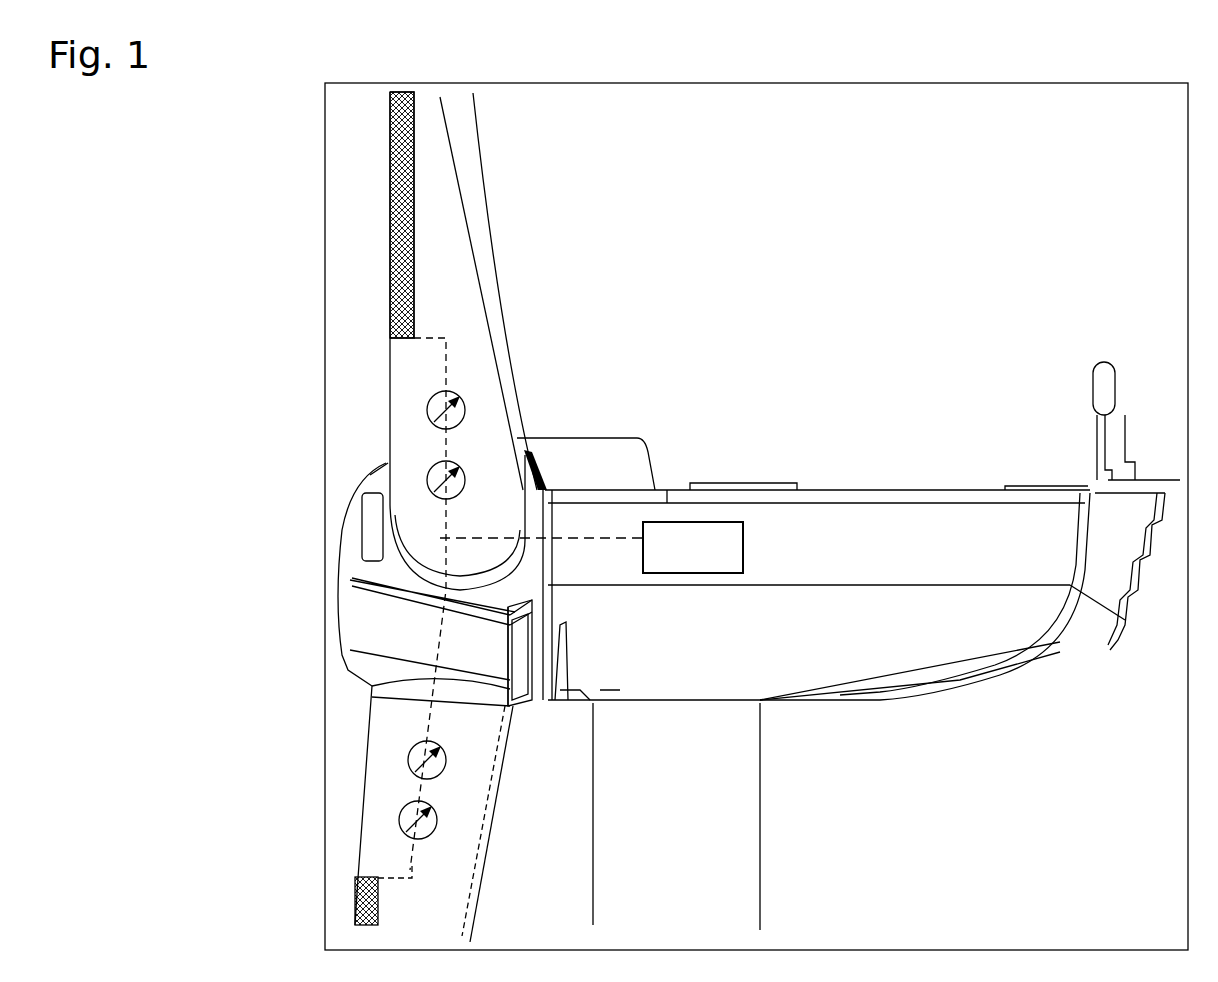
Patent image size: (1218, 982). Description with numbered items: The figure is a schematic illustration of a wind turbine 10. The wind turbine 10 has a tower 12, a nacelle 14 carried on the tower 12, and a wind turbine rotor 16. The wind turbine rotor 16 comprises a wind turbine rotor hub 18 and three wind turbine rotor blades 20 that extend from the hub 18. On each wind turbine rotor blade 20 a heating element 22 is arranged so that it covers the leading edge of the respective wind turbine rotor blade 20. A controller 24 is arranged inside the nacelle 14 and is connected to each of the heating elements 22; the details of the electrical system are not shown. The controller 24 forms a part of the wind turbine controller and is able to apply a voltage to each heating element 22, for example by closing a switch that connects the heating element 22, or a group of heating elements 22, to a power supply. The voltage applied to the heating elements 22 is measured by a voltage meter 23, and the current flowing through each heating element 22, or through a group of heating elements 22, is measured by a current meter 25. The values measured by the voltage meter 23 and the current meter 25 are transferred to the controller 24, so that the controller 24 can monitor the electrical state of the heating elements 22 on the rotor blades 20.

The wind turbine 10 is at (1048, 169).
The tower 12 is at (728, 845).
The nacelle 14 is at (893, 520).
The wind turbine rotor 16 is at (282, 407).
The wind turbine rotor hub 18 is at (347, 590).
The wind turbine rotor blade 20 is at (484, 252).
The heating element 22 is at (392, 210).
The voltage meter 23 is at (466, 410).
The controller 24 is at (691, 543).
The current meter 25 is at (468, 478).